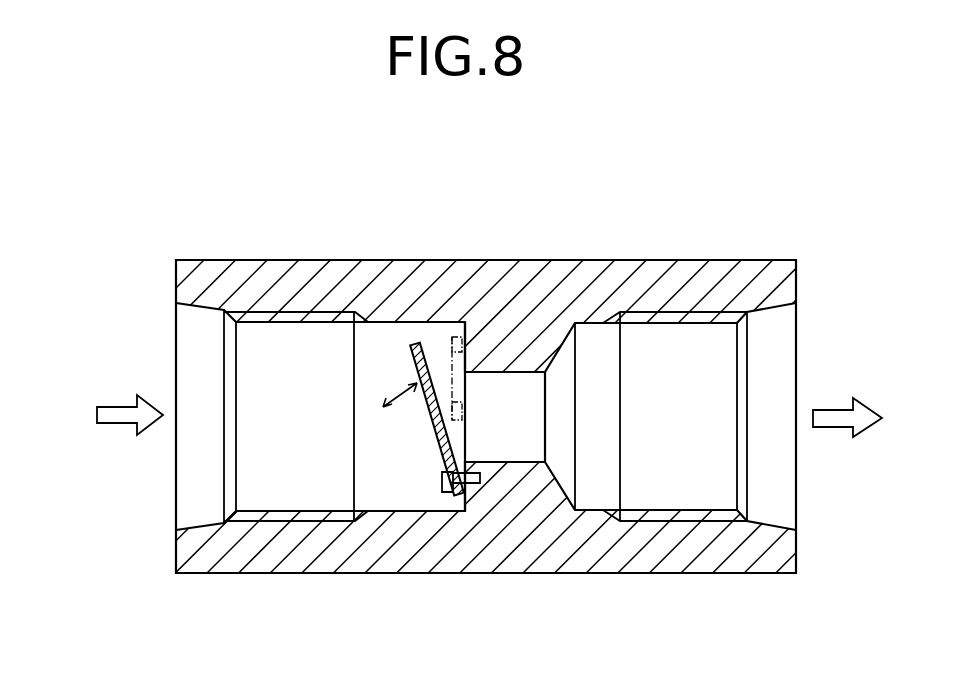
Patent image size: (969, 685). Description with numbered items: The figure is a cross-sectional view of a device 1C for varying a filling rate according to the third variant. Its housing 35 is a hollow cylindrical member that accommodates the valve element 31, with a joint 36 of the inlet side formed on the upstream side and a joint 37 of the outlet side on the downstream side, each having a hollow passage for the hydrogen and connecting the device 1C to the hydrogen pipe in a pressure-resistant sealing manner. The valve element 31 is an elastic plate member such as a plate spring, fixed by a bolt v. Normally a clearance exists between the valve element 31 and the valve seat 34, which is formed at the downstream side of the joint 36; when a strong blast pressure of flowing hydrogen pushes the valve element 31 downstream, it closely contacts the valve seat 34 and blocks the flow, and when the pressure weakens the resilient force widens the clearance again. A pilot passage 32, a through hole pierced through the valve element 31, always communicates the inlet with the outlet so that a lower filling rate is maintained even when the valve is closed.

The device for varying a filling rate 1C is at (672, 217).
The valve element 31 is at (410, 350).
The pilot passage 32 is at (443, 418).
The valve seat 34 is at (456, 350).
The housing 35 is at (557, 275).
The joint of inlet side 36 is at (215, 267).
The joint of outlet side 37 is at (778, 265).
The bolt v is at (442, 478).